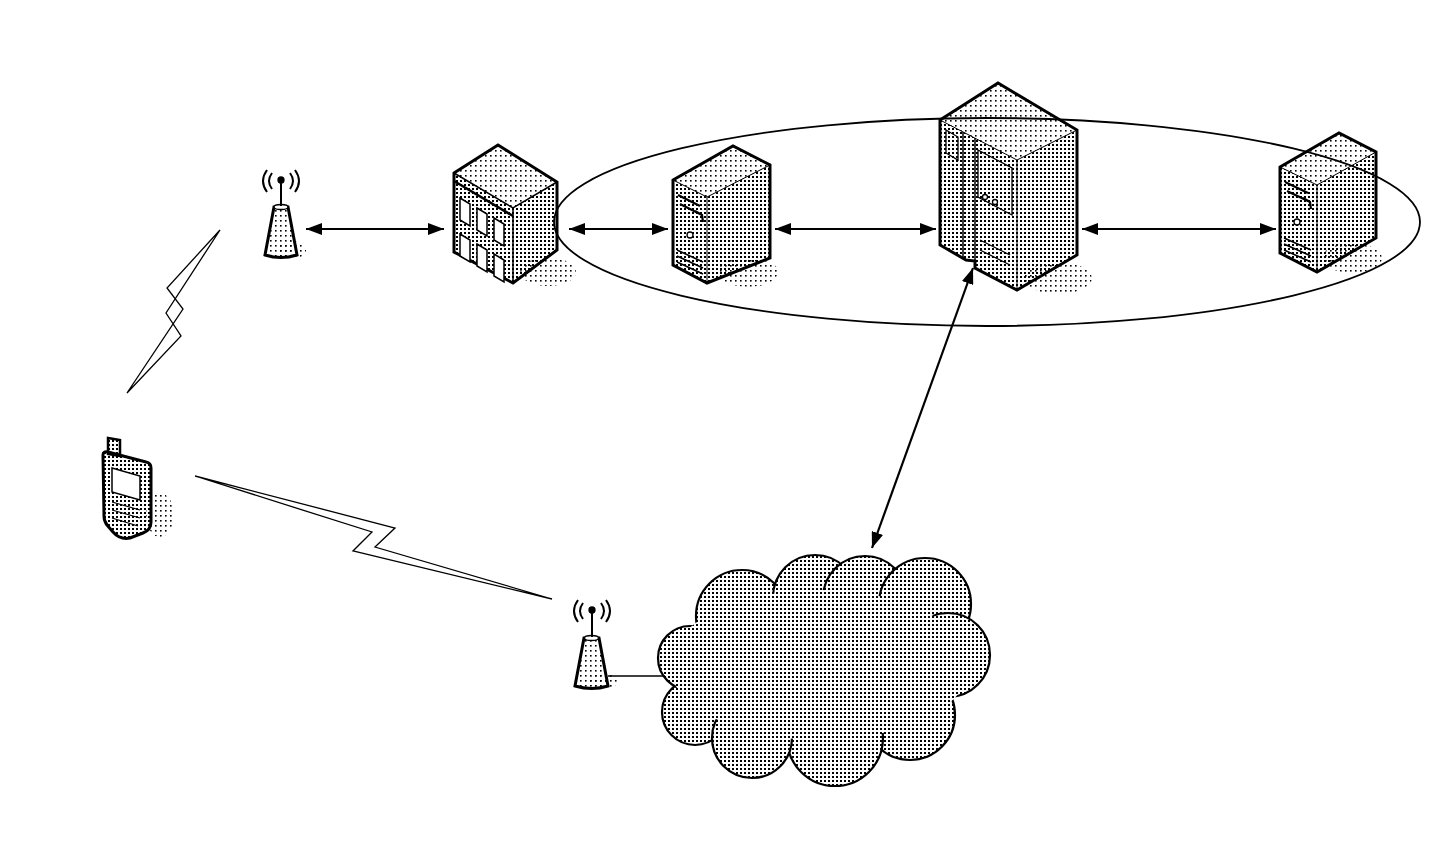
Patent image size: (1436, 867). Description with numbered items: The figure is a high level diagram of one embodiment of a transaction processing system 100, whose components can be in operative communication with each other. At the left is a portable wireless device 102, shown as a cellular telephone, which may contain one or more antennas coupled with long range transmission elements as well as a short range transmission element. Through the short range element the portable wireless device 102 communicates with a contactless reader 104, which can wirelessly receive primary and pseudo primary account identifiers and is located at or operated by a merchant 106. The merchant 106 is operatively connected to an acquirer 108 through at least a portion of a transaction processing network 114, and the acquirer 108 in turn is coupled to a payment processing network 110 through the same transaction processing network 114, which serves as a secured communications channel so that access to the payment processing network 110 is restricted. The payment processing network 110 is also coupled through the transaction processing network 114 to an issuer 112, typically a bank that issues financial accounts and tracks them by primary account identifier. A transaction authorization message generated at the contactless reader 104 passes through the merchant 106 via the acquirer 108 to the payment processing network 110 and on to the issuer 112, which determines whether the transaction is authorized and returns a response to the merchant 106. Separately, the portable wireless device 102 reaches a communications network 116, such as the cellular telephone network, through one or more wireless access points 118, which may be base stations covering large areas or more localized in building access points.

The transaction processing system 100 is at (1257, 592).
The portable wireless device 102 is at (152, 600).
The contactless reader 104 is at (302, 91).
The merchant 106 is at (533, 91).
The acquirer 108 is at (743, 91).
The payment processing network 110 is at (1019, 34).
The issuer 112 is at (1366, 64).
The transaction processing network 114 is at (1193, 350).
The communications network 116 is at (856, 831).
The wireless access point 118 is at (618, 741).